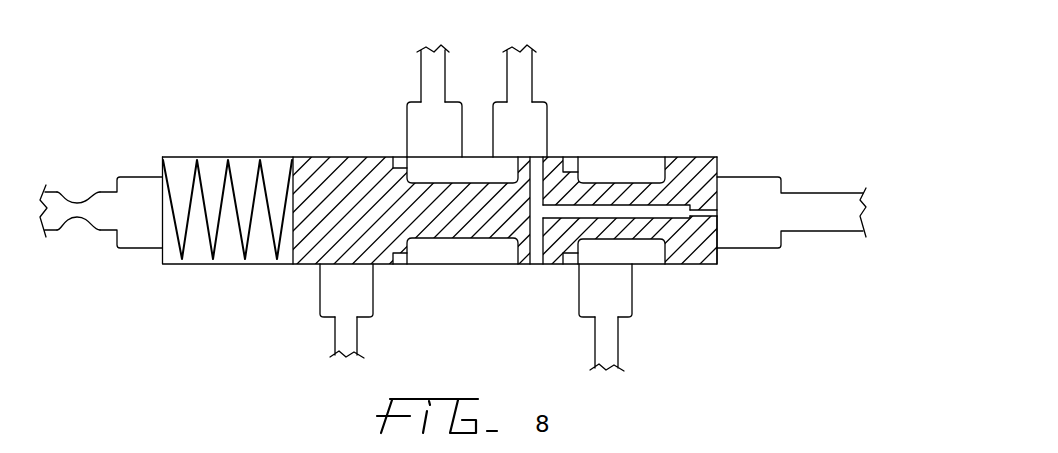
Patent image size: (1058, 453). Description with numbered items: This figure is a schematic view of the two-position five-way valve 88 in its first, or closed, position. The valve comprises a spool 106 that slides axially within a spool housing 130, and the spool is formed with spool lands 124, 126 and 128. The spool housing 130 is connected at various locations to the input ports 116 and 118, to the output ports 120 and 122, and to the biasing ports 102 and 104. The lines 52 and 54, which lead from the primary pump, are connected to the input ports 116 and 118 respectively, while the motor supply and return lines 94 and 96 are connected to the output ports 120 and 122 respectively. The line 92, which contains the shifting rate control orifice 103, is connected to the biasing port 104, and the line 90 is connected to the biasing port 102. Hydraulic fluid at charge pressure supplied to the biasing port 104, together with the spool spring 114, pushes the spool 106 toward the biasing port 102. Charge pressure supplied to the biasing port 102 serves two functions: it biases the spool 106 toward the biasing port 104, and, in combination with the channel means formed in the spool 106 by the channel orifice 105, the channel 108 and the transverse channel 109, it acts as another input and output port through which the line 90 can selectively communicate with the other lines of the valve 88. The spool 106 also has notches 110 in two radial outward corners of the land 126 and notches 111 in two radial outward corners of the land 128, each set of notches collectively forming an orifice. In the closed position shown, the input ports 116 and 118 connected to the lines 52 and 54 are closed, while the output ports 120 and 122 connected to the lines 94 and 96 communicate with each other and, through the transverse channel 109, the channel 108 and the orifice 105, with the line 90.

The valve 88 is at (704, 85).
The spool land 126 is at (523, 157).
The spool spring 114 is at (222, 190).
The biasing port 104 is at (147, 198).
The shifting rate control orifice 103 is at (77, 217).
The line 92 is at (103, 198).
The spool 106 is at (450, 218).
The spool land 128 is at (315, 157).
The notches 111 is at (400, 157).
The transverse channel 109 is at (537, 238).
The spool land 124 is at (698, 157).
The notches 110 is at (573, 157).
The channel 108 is at (615, 210).
The channel orifice 105 is at (700, 217).
The spool housing 130 is at (698, 265).
The biasing port 102 is at (757, 190).
The line 90 is at (833, 210).
The output port 122 is at (412, 123).
The motor supply and return line 96 is at (422, 82).
The output port 120 is at (532, 122).
The motor supply and return line 94 is at (533, 70).
The input port 118 is at (328, 288).
The line 54 is at (347, 333).
The input port 116 is at (622, 295).
The line 52 is at (603, 342).